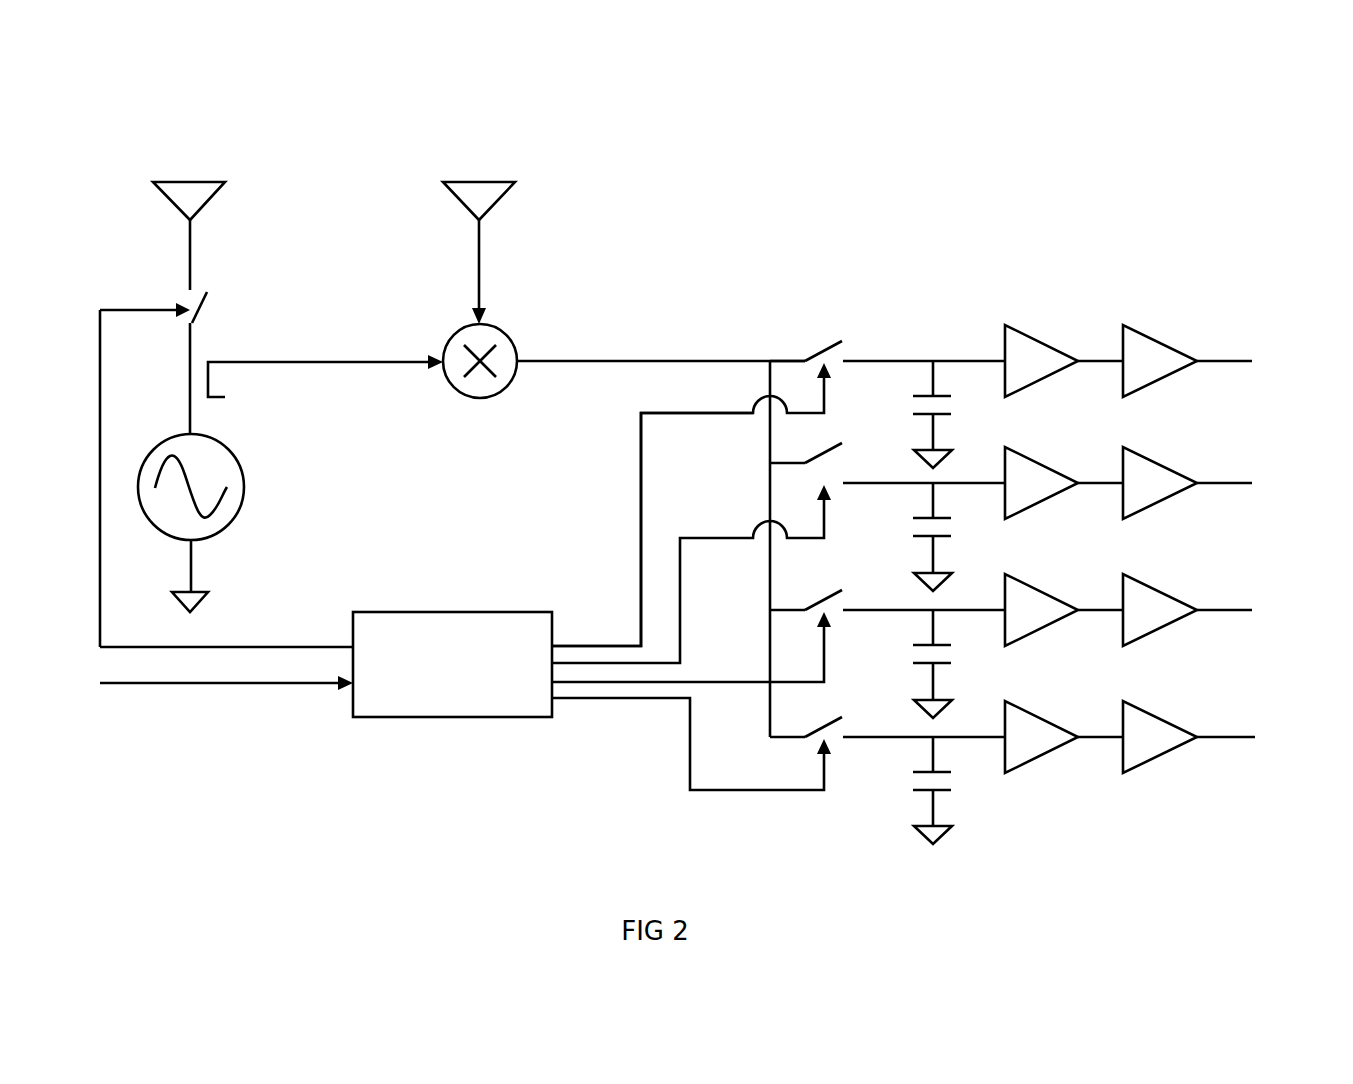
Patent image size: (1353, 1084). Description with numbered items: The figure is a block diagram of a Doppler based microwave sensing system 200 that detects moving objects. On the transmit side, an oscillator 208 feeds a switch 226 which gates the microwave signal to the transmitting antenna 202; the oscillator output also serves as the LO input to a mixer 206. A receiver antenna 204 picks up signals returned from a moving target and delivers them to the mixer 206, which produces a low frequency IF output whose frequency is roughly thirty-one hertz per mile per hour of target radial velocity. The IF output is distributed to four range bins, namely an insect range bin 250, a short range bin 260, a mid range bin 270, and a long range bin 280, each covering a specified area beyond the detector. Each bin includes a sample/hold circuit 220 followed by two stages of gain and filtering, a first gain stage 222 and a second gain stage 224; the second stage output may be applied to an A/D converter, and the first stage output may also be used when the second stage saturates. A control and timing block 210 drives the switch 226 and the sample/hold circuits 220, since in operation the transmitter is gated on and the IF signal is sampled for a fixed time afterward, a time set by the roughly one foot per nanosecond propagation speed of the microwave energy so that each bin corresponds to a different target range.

The microwave sensing system 200 is at (706, 447).
The transmitting antenna 202 is at (217, 236).
The receiver antenna 204 is at (504, 253).
The mixer 206 is at (506, 362).
The oscillator 208 is at (219, 523).
The control/timing circuit 210 is at (326, 683).
The sample/hold circuit 220 is at (822, 340).
The first gain stage 222 is at (1010, 322).
The second gain stage 224 is at (1130, 327).
The switch 226 is at (176, 362).
The insect range bin 250 is at (1254, 320).
The short range bin 260 is at (1254, 441).
The mid range bin 270 is at (1256, 565).
The long range bin 280 is at (1256, 691).